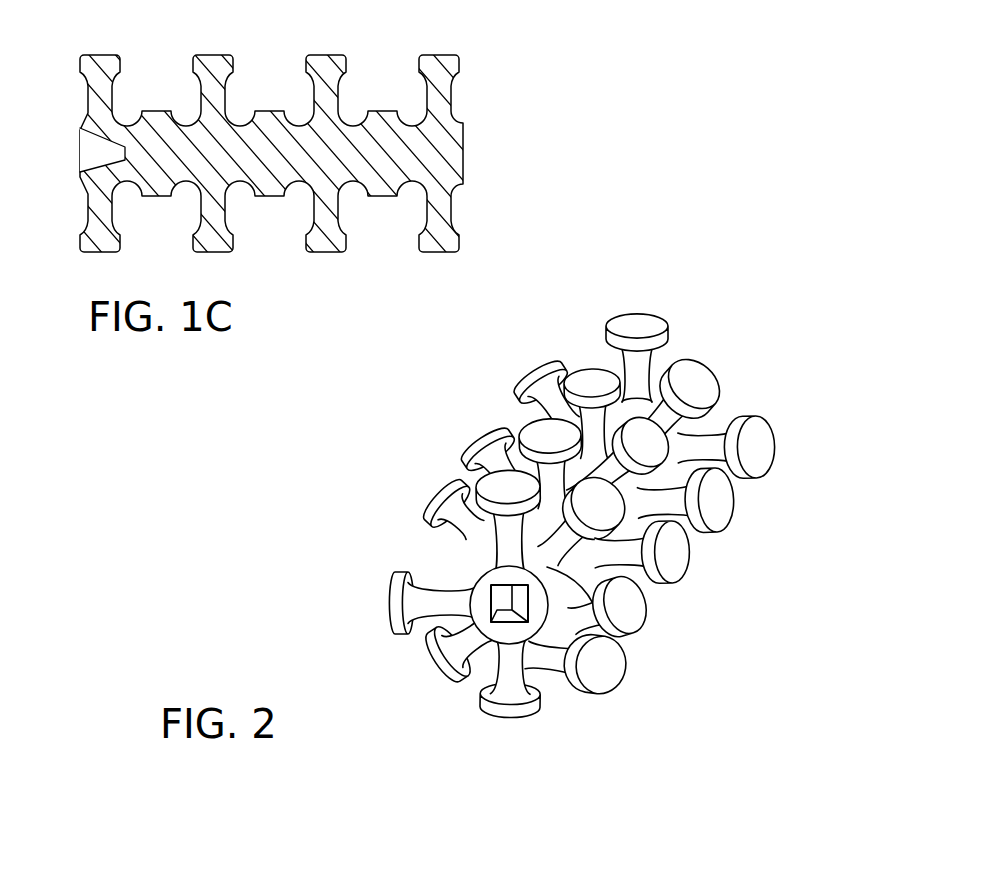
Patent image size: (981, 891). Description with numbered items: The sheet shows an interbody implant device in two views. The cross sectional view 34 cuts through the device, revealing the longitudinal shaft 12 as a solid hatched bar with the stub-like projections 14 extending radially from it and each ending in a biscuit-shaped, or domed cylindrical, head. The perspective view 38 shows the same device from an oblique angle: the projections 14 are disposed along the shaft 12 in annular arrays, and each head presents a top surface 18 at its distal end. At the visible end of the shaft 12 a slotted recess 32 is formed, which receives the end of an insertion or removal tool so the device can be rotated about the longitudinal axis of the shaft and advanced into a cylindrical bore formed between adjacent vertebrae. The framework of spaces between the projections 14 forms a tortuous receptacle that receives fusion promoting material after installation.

In FIG. 1C, the cross sectional view 34 is at (476, 50).
In FIG. 2, the perspective view 38 is at (597, 523).
In FIG. 2, the longitudinal shaft 12 is at (510, 643).
In FIG. 2, the stub-like projections 14 is at (460, 495).
In FIG. 2, the top surface 18 is at (646, 326).
In FIG. 2, the slotted recess 32 is at (498, 606).